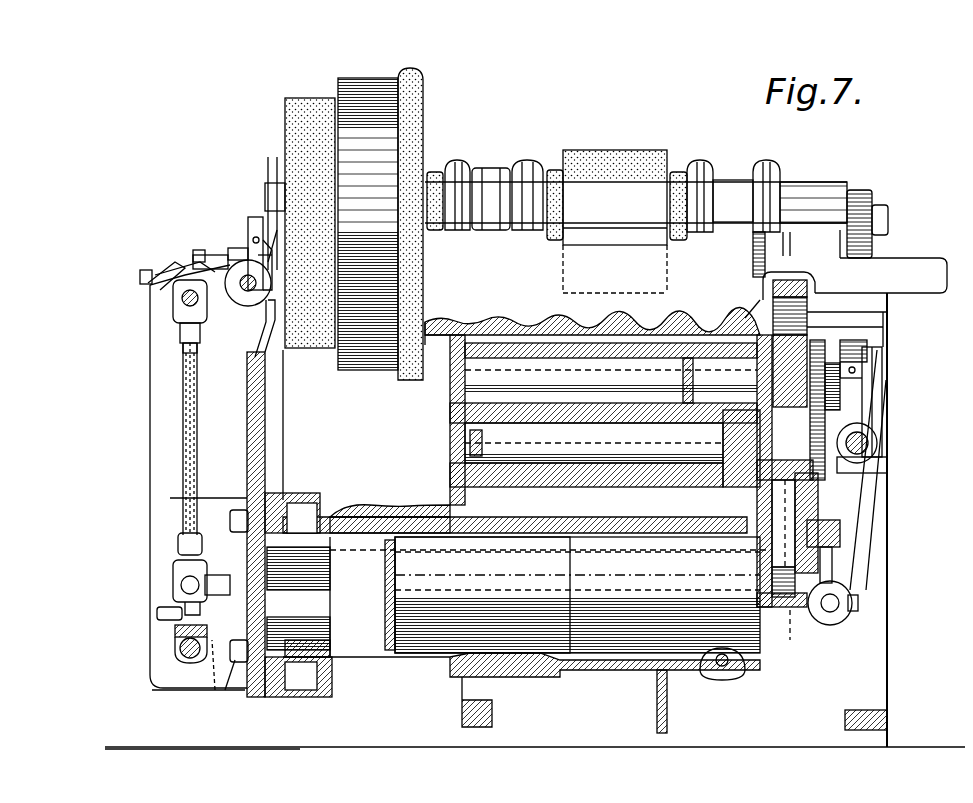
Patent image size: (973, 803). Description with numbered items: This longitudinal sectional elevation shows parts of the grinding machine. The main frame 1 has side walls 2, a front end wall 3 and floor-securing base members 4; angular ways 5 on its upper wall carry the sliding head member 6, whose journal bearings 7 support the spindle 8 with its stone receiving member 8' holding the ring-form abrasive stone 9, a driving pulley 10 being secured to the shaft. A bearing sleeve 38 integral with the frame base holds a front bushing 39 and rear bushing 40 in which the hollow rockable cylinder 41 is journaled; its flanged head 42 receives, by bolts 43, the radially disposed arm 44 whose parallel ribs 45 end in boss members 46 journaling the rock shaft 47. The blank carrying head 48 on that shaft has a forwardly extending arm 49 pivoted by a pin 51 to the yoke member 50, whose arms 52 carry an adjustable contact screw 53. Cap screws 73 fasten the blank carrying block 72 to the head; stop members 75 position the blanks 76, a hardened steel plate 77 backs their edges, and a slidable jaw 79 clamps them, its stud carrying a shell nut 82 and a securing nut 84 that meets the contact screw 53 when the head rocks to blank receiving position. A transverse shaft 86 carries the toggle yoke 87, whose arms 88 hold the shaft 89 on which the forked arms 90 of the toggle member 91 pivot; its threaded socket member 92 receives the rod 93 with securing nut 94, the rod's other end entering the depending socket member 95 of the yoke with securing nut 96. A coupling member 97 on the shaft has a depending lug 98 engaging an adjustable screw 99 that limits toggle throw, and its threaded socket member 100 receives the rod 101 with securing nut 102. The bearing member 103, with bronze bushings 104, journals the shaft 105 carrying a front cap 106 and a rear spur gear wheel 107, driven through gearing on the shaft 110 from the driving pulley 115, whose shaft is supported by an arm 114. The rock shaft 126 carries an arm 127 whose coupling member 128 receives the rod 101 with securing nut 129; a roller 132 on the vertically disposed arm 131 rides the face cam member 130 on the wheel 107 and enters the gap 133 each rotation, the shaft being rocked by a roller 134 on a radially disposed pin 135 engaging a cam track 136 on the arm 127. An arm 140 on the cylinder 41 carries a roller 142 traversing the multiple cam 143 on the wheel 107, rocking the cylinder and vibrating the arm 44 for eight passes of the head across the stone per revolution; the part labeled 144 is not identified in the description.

The main frame 1 is at (889, 665).
The side walls 2 is at (880, 640).
The front end wall 3 is at (526, 428).
The base members 4 is at (889, 732).
The angular ways 5 is at (462, 343).
The head member 6 is at (772, 272).
The journal bearings 7 is at (500, 178).
The spindle 8 is at (609, 183).
The stone receiving member 8' is at (396, 224).
The abrasive stone 9 is at (302, 100).
The driving pulley 10 is at (645, 152).
The bearing sleeve 38 is at (555, 668).
The bushing 39 is at (335, 520).
The bushing 40 is at (680, 672).
The hollow rockable cylinder 41 is at (510, 660).
The flanged head 42 is at (280, 500).
The bolts 43 is at (278, 698).
The radially disposed arm 44 is at (266, 430).
The parallel ribs 45 is at (160, 516).
The boss members 46 is at (160, 383).
The rock shaft 47 is at (195, 258).
The blank carrying head 48 is at (192, 255).
The forwardly extending arm 49 is at (180, 332).
The yoke member 50 is at (172, 300).
The pin 51 is at (182, 303).
The arms 52 is at (152, 288).
The adjustable contact screw 53 is at (140, 278).
The blank carrying block 72 is at (240, 235).
The cap screws 73 is at (230, 250).
The stop members 75 is at (285, 258).
The blanks 76 is at (262, 238).
The hardened steel plate 77 is at (258, 222).
The slidable jaw 79 is at (255, 257).
The shell nut 82 is at (170, 270).
The securing nut 84 is at (148, 282).
The transverse shaft 86 is at (150, 675).
The toggle yoke 87 is at (165, 690).
The arms 88 is at (175, 630).
The shaft 89 is at (184, 606).
The forked arms 90 is at (180, 585).
The toggle member 91 is at (173, 575).
The threaded socket member 92 is at (205, 580).
The rod 93 is at (170, 498).
The securing nut 94 is at (178, 540).
The depending socket member 95 is at (183, 348).
The securing nut 96 is at (184, 360).
The coupling member 97 is at (200, 680).
The depending lug 98 is at (178, 655).
The screw 99 is at (175, 648).
The threaded socket member 100 is at (157, 613).
The rod 101 is at (300, 690).
The securing nut 102 is at (223, 686).
The bearing member 103 is at (563, 481).
The bronze bushings 104 is at (630, 475).
The shaft 105 is at (582, 439).
The cap 106 is at (580, 390).
The spur gear wheel 107 is at (812, 300).
The shaft 110 is at (725, 485).
The arm 114 is at (700, 470).
The driving pulley 115 is at (158, 443).
The rock shaft 126 is at (840, 420).
The arm 127 is at (870, 470).
The coupling member 128 is at (852, 590).
The securing nut 129 is at (860, 600).
The face cam member 130 is at (883, 380).
The vertically disposed arm 131 is at (868, 350).
The roller 132 is at (857, 366).
The gap 133 is at (850, 320).
The roller 134 is at (888, 462).
The radially disposed pin 135 is at (878, 443).
The cam track 136 is at (835, 560).
The arm 140 is at (760, 460).
The roller 142 is at (738, 671).
The multiple cam 143 is at (739, 302).
The plate top 144 is at (278, 322).